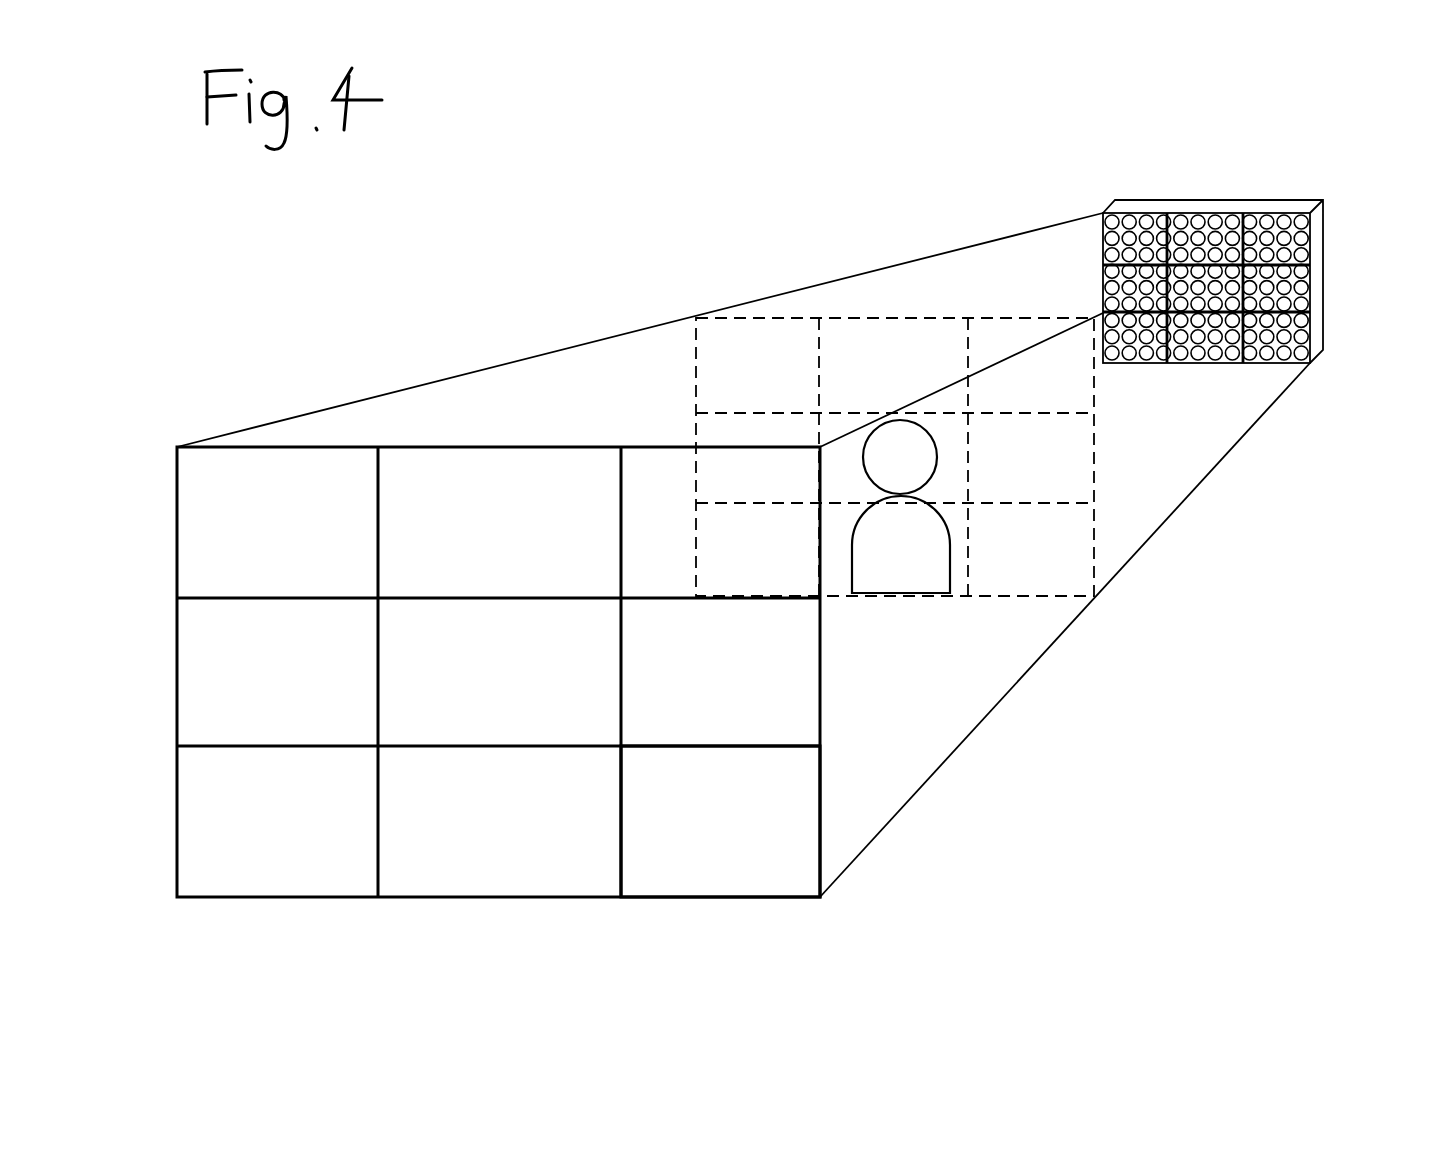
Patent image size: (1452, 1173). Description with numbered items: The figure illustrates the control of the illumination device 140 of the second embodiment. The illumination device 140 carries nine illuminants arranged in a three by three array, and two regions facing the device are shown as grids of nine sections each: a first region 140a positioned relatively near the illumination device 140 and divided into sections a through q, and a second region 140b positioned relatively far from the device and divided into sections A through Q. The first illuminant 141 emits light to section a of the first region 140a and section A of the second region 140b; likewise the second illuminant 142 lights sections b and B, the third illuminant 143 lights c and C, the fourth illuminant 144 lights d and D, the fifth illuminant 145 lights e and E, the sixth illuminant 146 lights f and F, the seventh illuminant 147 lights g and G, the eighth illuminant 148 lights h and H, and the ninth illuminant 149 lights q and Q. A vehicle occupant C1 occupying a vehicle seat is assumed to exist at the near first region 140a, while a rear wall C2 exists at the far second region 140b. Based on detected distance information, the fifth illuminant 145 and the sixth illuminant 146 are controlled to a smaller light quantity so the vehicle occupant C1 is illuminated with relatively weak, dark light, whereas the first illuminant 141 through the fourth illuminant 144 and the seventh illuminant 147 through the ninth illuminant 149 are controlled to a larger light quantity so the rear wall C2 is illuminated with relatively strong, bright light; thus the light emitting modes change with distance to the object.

The illumination device 140 is at (1283, 175).
The first illuminant 141 is at (1125, 222).
The second illuminant 142 is at (1103, 280).
The third illuminant 143 is at (1140, 352).
The fourth illuminant 144 is at (1212, 228).
The fifth illuminant 145 is at (1188, 352).
The sixth illuminant 146 is at (1223, 362).
The seventh illuminant 147 is at (1302, 243).
The eighth illuminant 148 is at (1305, 291).
The ninth illuminant 149 is at (1303, 333).
The first region 140a is at (1096, 536).
The second region 140b is at (822, 826).
The vehicle occupant C1 is at (952, 573).
The rear wall C2 is at (662, 879).